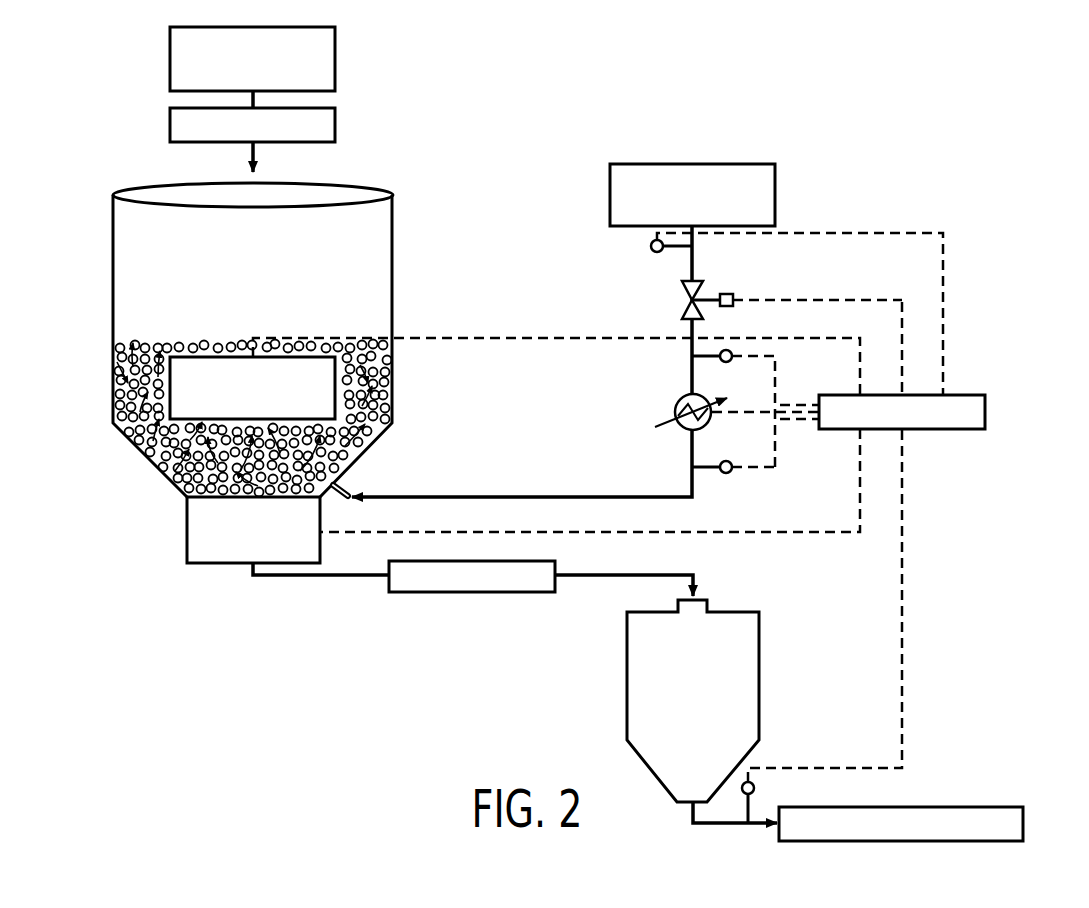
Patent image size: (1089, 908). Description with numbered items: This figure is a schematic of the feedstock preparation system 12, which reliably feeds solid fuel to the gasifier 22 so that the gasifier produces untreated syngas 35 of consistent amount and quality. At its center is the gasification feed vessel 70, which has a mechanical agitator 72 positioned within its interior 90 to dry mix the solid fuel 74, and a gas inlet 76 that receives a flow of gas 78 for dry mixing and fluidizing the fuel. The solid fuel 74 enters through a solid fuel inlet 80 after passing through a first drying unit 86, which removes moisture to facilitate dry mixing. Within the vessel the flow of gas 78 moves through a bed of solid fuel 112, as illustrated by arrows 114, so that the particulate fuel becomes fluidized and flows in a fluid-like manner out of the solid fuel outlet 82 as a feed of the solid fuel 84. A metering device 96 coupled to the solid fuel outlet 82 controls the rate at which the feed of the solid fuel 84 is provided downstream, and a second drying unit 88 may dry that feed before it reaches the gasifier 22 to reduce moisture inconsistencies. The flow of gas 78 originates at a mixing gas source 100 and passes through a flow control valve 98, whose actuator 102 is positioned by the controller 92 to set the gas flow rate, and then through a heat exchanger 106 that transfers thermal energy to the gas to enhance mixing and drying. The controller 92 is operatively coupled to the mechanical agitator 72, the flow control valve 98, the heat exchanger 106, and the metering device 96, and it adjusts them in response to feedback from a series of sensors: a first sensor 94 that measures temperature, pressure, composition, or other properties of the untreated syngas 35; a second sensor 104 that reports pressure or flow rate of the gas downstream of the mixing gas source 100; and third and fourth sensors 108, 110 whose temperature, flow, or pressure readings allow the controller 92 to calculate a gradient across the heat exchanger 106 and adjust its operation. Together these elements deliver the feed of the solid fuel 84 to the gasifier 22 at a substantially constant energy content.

The feedstock preparation system 12 is at (959, 124).
The gasifier 22 is at (627, 677).
The untreated syngas 35 is at (1023, 825).
The gasification feed vessel 70 is at (113, 238).
The mechanical agitator 72 is at (210, 355).
The solid fuel 74 is at (335, 60).
The gas inlet 76 is at (342, 492).
The flow of gas 78 is at (522, 492).
The solid fuel inlet 80 is at (152, 188).
The solid fuel outlet 82 is at (184, 497).
The feed of the solid fuel 84 is at (322, 578).
The first drying unit 86 is at (335, 125).
The second drying unit 88 is at (472, 593).
The interior 90 is at (357, 257).
The controller 92 is at (985, 412).
The first sensor 94 is at (755, 784).
The metering device 96 is at (185, 535).
The flow control valve 98 is at (684, 294).
The mixing gas source 100 is at (775, 193).
The actuator 102 is at (731, 291).
The second sensor 104 is at (652, 252).
The heat exchanger 106 is at (680, 400).
The third sensor 108 is at (734, 358).
The fourth sensor 110 is at (731, 472).
The bed of solid fuel 112 is at (154, 328).
The arrows 114 is at (145, 453).